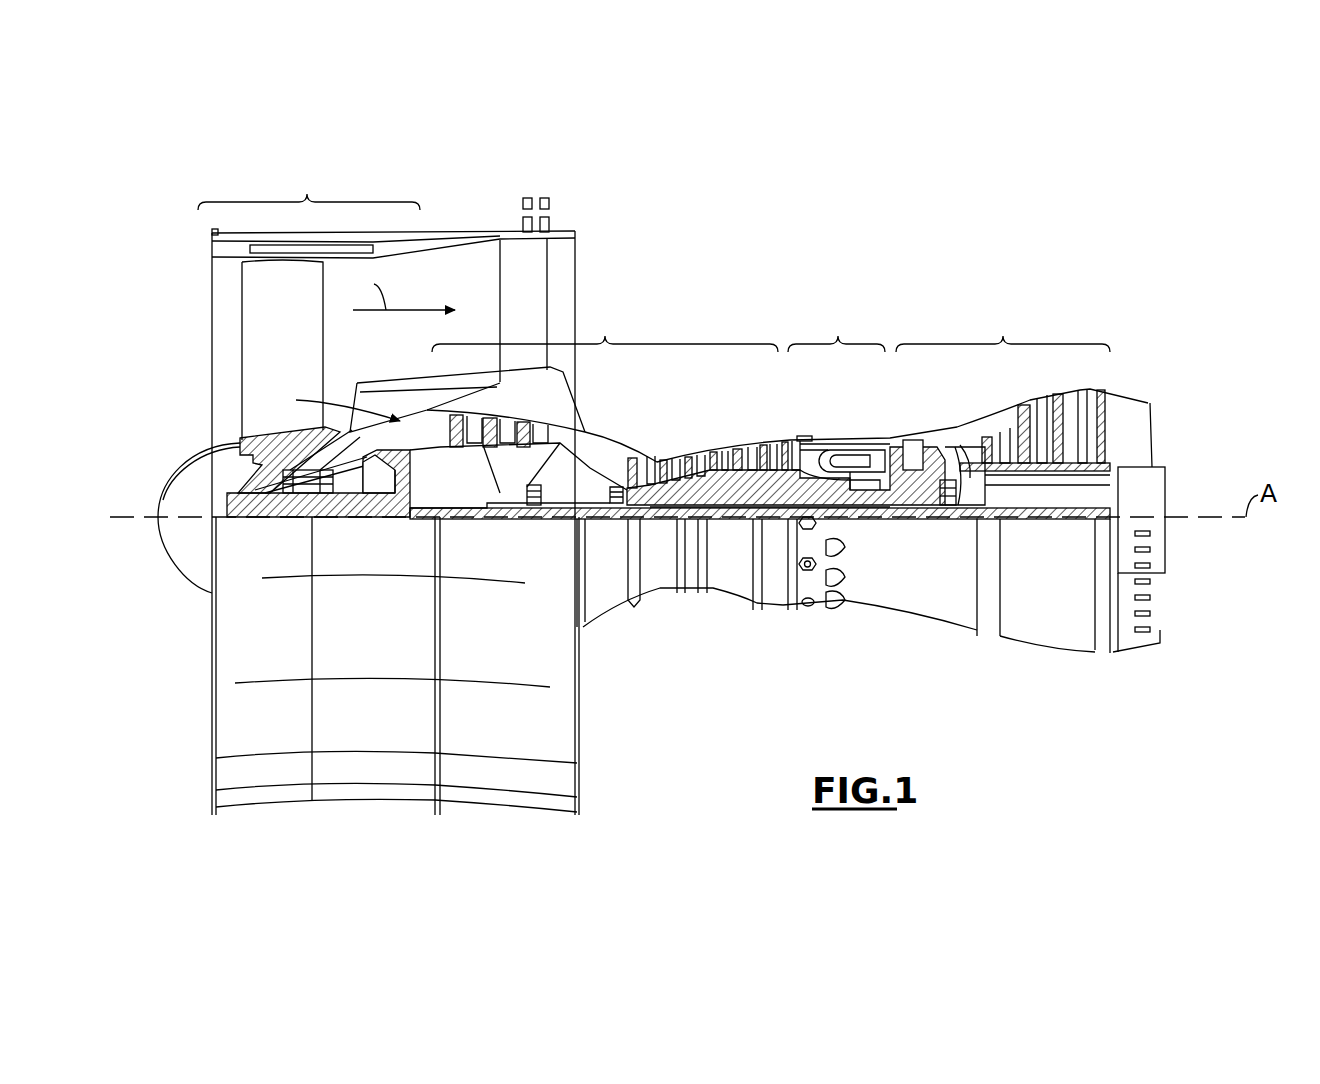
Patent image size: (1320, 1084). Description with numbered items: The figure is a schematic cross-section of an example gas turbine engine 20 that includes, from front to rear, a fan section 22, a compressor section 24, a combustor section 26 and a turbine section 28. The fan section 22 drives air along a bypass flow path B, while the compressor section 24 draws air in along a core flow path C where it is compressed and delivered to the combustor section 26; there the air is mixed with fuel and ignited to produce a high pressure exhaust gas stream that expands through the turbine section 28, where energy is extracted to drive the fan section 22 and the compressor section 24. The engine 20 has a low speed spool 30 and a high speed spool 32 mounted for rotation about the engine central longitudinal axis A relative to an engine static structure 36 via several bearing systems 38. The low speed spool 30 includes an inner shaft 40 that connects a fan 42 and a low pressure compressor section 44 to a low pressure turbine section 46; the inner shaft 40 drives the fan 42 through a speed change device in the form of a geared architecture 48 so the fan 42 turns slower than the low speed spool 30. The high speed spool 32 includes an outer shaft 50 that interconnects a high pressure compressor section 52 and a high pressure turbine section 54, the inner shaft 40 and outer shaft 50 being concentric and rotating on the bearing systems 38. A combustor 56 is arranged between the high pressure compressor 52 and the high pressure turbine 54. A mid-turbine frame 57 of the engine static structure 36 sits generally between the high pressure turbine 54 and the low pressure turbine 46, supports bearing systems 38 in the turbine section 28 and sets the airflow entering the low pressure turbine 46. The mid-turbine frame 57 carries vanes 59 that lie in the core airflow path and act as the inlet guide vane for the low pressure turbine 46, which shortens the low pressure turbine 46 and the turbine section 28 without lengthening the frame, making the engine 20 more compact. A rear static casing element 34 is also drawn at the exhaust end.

The gas turbine engine 20 is at (858, 286).
The fan section 22 is at (309, 188).
The compressor section 24 is at (605, 332).
The combustor section 26 is at (836, 332).
The turbine section 28 is at (1003, 332).
The low speed spool 30 is at (733, 525).
The high speed spool 32 is at (778, 447).
The turbine exhaust case 34 is at (1100, 478).
The engine static structure 36 is at (773, 610).
The bearing systems 38 is at (288, 519).
The inner shaft 40 is at (598, 520).
The fan 42 is at (296, 366).
The low pressure compressor section 44 is at (510, 420).
The low pressure turbine section 46 is at (1040, 450).
The geared architecture 48 is at (400, 500).
The outer shaft 50 is at (855, 500).
The high pressure compressor section 52 is at (700, 488).
The high pressure turbine section 54 is at (915, 440).
The combustor 56 is at (845, 462).
The mid-turbine frame 57 is at (961, 438).
The vanes 59 is at (953, 450).